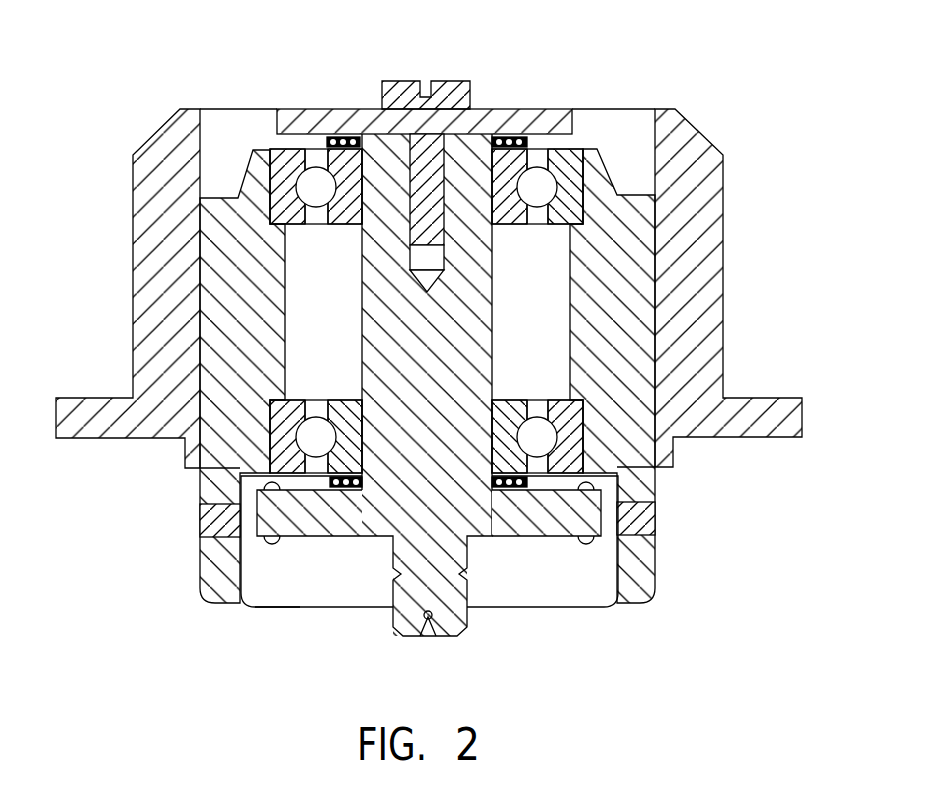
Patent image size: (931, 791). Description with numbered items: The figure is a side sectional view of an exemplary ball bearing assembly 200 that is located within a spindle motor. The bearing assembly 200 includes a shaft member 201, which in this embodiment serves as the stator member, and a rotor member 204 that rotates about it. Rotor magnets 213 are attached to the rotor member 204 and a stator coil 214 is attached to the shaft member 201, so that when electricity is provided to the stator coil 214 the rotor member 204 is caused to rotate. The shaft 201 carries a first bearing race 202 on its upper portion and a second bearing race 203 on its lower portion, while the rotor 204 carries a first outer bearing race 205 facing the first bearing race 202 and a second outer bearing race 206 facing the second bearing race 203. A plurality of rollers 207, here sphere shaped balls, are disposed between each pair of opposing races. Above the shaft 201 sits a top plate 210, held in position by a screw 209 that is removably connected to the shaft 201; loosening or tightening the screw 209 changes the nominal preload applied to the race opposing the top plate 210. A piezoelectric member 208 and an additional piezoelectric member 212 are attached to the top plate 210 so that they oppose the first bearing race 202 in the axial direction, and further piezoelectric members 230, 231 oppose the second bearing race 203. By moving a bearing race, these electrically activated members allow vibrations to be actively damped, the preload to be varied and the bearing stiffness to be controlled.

The ball bearing assembly 200 is at (427, 354).
The shaft member 201 is at (397, 511).
The first bearing race 202 is at (518, 157).
The second bearing race 203 is at (583, 478).
The rotor member 204 is at (625, 316).
The first outer bearing race 205 is at (573, 195).
The second outer bearing race 206 is at (573, 455).
The rollers 207 is at (307, 195).
The piezoelectric member 208 is at (527, 139).
The screw 209 is at (450, 92).
The top plate 210 is at (355, 118).
The piezoelectric member 212 is at (327, 138).
The rotor magnets 213 is at (217, 527).
The stator coil 214 is at (255, 608).
The piezoelectric member 230 is at (327, 482).
The piezoelectric member 231 is at (520, 480).